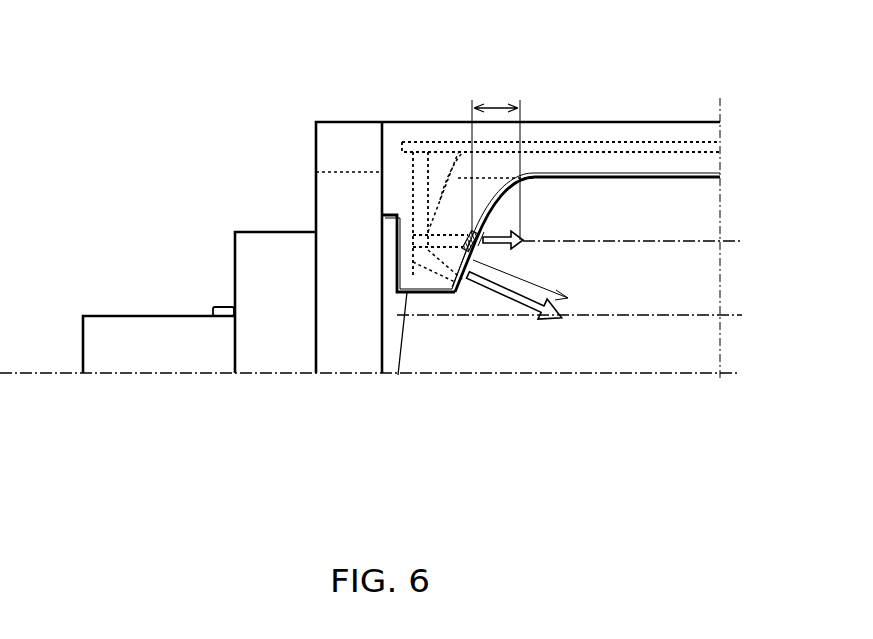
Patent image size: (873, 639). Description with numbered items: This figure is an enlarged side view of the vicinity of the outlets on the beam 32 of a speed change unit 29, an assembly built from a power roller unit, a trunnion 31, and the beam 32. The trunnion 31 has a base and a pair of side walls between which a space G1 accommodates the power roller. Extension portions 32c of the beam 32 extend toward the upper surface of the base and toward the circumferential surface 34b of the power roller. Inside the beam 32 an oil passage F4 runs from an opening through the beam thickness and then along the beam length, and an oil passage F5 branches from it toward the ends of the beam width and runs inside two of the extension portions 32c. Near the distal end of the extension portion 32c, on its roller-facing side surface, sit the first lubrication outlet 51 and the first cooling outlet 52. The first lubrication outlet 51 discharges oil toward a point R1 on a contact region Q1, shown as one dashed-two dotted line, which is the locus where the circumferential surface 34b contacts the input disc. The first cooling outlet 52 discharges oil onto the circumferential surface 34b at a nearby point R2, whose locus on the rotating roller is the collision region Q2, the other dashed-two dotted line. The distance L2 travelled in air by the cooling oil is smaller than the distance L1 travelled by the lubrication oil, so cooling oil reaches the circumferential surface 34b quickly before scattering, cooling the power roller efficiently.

The speed change unit 29 is at (150, 90).
The trunnion 31 is at (72, 348).
The beam 32 is at (570, 122).
The extension portion 32c is at (512, 200).
The circumferential surface 34b is at (398, 345).
The first lubrication outlet 51 is at (462, 250).
The first cooling outlet 52 is at (490, 250).
The space G1 is at (393, 306).
The distance L1 is at (511, 255).
The distance L2 is at (496, 156).
The oil passage F4 is at (622, 141).
The oil passage F5 is at (458, 153).
The contact region Q1 is at (665, 315).
The collision region Q2 is at (677, 240).
The point R1 is at (562, 318).
The point R2 is at (537, 247).